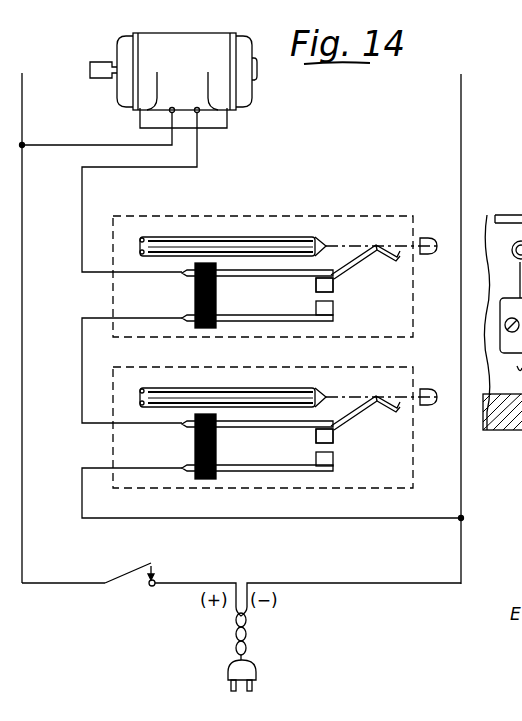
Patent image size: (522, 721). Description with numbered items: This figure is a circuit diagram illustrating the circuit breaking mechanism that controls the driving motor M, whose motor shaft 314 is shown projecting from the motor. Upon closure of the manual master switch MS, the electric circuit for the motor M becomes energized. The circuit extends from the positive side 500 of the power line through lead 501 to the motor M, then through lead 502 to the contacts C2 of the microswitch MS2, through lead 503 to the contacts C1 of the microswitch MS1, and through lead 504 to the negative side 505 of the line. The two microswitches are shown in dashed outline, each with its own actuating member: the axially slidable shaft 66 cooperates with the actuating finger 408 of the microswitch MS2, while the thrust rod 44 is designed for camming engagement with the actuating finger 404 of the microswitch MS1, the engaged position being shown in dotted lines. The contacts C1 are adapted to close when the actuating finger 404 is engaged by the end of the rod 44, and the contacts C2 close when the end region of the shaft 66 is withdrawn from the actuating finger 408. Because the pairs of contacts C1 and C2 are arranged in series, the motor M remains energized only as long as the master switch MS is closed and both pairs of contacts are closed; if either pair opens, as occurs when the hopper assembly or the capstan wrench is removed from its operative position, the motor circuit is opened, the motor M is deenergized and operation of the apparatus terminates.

The driving motor M is at (192, 69).
The motor shaft 314 is at (97, 66).
The lead 501 is at (72, 145).
The lead 502 is at (197, 154).
The lead 503 is at (82, 350).
The lead 504 is at (194, 519).
The negative side of the line 505 is at (461, 558).
The positive side of the power line 500 is at (22, 551).
The master switch MS is at (130, 569).
The microswitch MS2 is at (120, 292).
The microswitch MS1 is at (120, 445).
The axially slidable shaft 66 is at (163, 240).
The thrust rod 44 is at (166, 393).
The actuating finger 408 is at (352, 263).
The actuating finger 404 is at (350, 412).
The contacts C2 is at (337, 295).
The contacts C1 is at (336, 446).